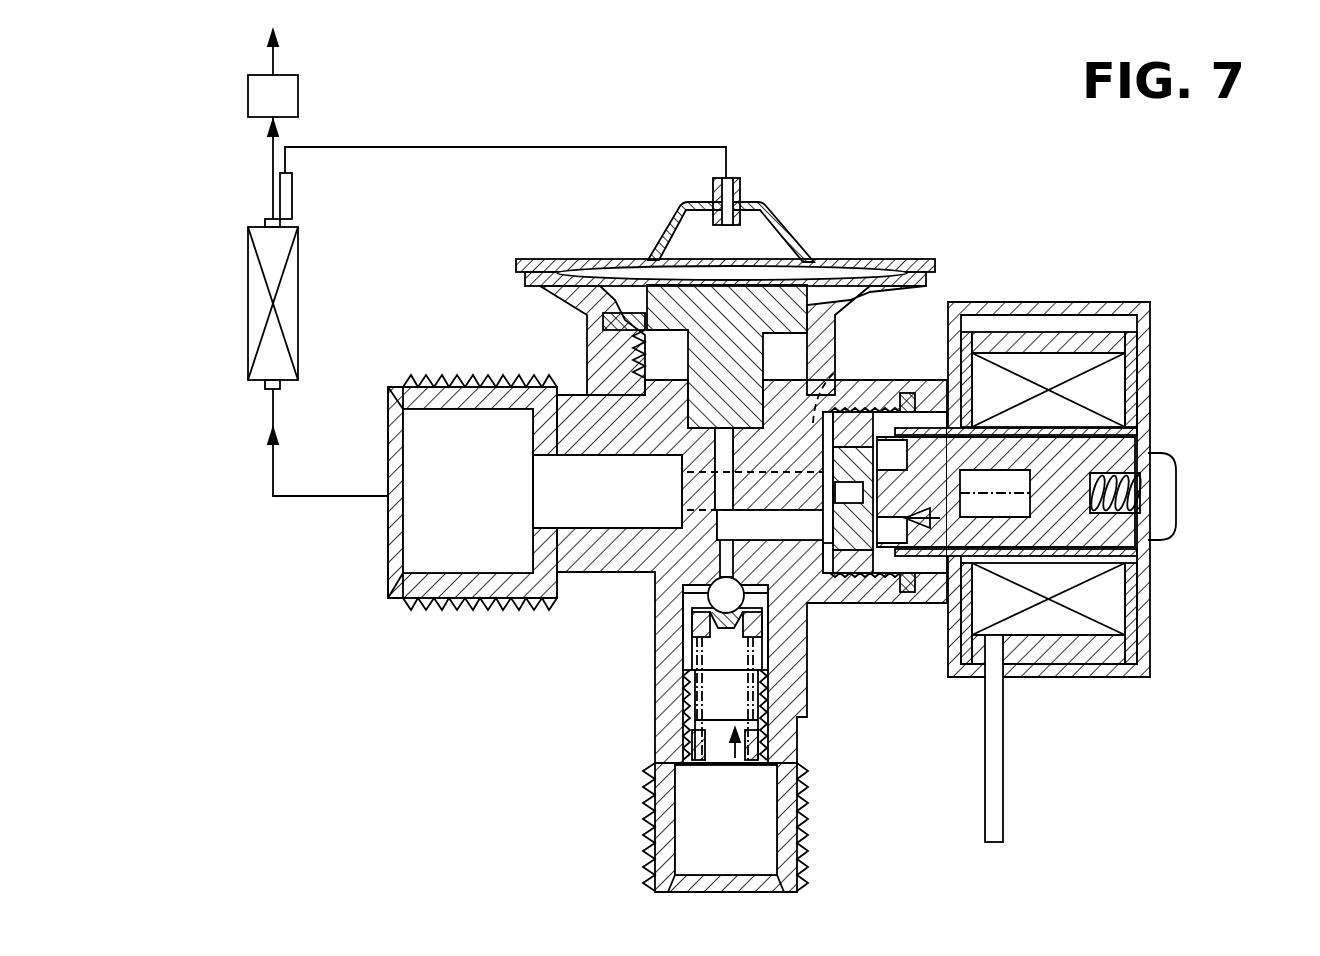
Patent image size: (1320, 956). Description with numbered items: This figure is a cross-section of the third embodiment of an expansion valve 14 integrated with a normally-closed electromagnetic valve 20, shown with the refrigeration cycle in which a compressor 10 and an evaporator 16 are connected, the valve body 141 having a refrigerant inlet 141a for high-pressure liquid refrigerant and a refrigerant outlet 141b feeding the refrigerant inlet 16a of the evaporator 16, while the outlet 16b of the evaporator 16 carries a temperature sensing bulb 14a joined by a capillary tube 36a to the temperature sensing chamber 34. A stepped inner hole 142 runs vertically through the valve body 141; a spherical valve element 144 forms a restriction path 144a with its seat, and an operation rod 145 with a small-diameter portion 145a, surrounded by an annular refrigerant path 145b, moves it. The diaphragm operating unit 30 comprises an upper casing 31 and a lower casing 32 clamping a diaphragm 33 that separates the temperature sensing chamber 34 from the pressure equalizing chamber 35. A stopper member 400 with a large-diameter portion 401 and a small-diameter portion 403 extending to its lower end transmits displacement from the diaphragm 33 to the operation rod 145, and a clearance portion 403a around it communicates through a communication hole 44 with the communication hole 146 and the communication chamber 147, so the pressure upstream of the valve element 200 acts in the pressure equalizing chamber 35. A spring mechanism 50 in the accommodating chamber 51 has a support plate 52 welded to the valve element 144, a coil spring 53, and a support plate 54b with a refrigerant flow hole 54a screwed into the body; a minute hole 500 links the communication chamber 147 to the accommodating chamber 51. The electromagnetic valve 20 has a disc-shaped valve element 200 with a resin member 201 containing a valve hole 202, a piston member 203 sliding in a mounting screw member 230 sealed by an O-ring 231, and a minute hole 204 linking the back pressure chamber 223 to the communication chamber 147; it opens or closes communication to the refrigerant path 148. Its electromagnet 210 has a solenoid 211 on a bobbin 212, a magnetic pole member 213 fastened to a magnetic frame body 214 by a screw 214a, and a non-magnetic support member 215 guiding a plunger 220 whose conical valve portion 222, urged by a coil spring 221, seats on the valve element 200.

The compressor 10 is at (298, 96).
The expansion valve 14 is at (592, 580).
The temperature sensing bulb 14a is at (292, 190).
The evaporator 16 is at (298, 288).
The refrigerant inlet of the evaporator 16a is at (280, 389).
The outlet of the evaporator 16b is at (280, 224).
The electromagnetic valve 20 is at (1075, 543).
The diaphragm operating unit 30 is at (736, 271).
The upper casing 31 is at (860, 262).
The lower casing 32 is at (925, 262).
The diaphragm 33 is at (870, 292).
The temperature sensing chamber 34 is at (752, 236).
The pressure equalizing chamber 35 is at (583, 305).
The capillary tube 36a is at (615, 147).
The communication hole 44 is at (782, 560).
The spring mechanism 50 is at (808, 832).
The accommodating chamber 51 is at (756, 748).
The support plate 52 is at (756, 705).
The coil spring 53 is at (697, 736).
The refrigerant flow hole 54a is at (683, 792).
The support plate 54b is at (690, 762).
The valve body 141 is at (516, 610).
The refrigerant inlet 141a is at (700, 862).
The refrigerant outlet 141b is at (430, 538).
The stepped inner hole 142 is at (690, 460).
The spherical valve element 144 is at (700, 662).
The restriction path 144a is at (712, 642).
The operation rod 145 is at (716, 562).
The small-diameter portion 145a is at (716, 604).
The annular refrigerant path 145b is at (700, 620).
The communication hole 146 is at (770, 612).
The communication chamber 147 is at (790, 540).
The refrigerant path 148 is at (838, 402).
The valve element 200 is at (1010, 680).
The resin member 201 is at (877, 560).
The valve hole 202 is at (842, 560).
The piston member 203 is at (897, 600).
The minute hole 204 is at (905, 380).
The electromagnet 210 is at (1156, 302).
The solenoid 211 is at (1152, 368).
The bobbin 212 is at (1152, 392).
The magnetic pole member 213 is at (1130, 472).
The magnetic frame body 214 is at (1145, 588).
The screw 214a is at (1165, 500).
The support member 215 is at (1152, 433).
The plunger 220 is at (1135, 628).
The coil spring 221 is at (1135, 552).
The valve portion 222 is at (1065, 680).
The back pressure chamber 223 is at (1142, 490).
The mounting screw member 230 is at (942, 395).
The O-ring 231 is at (960, 678).
The stopper member 400 is at (756, 292).
The large-diameter portion 401 is at (812, 268).
The small-diameter portion 403 is at (705, 350).
The clearance portion 403a is at (660, 355).
The minute hole 500 is at (746, 606).